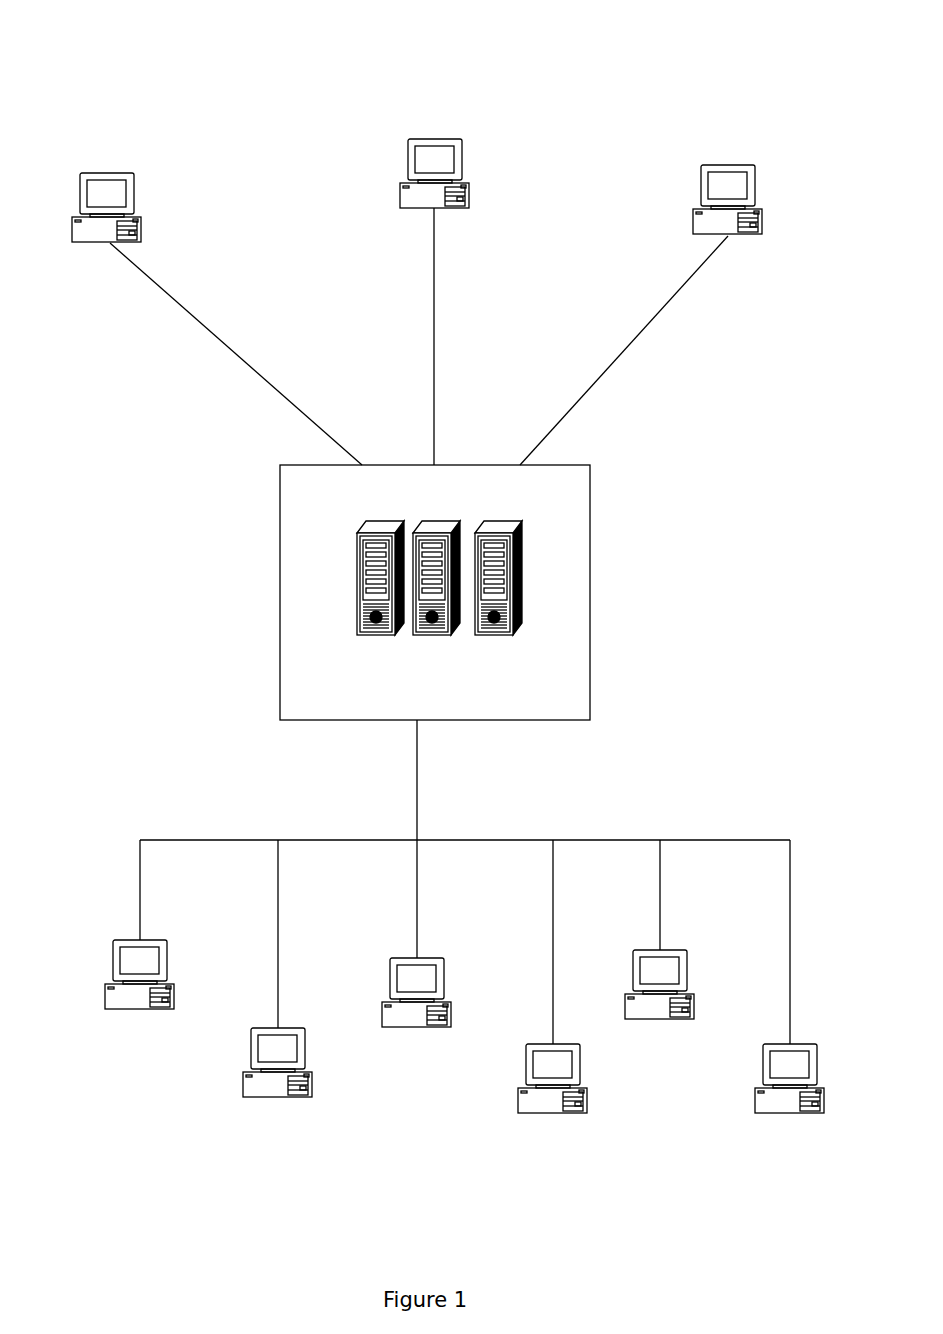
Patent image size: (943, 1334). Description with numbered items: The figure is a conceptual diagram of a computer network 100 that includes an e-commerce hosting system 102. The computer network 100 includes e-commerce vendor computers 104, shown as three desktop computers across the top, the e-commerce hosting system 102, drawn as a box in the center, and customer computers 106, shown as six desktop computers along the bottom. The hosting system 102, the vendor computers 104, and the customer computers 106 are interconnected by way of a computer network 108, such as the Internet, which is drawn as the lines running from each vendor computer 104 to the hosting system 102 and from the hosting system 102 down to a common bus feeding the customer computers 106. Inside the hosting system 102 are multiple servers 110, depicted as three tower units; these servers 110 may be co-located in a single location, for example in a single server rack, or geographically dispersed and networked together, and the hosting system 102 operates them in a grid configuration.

The computer network 100 is at (289, 68).
The e-commerce hosting system 102 is at (489, 592).
The e-commerce vendor computers 104 is at (115, 167).
The customer computers 106 is at (122, 1010).
The computer network 108 is at (266, 372).
The servers 110 is at (505, 636).